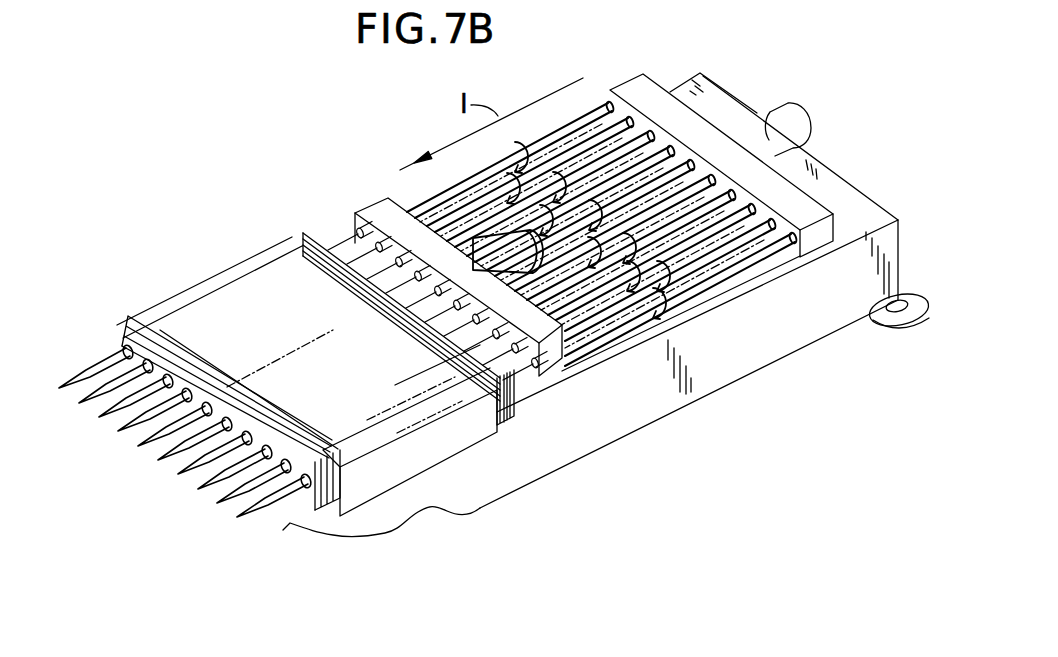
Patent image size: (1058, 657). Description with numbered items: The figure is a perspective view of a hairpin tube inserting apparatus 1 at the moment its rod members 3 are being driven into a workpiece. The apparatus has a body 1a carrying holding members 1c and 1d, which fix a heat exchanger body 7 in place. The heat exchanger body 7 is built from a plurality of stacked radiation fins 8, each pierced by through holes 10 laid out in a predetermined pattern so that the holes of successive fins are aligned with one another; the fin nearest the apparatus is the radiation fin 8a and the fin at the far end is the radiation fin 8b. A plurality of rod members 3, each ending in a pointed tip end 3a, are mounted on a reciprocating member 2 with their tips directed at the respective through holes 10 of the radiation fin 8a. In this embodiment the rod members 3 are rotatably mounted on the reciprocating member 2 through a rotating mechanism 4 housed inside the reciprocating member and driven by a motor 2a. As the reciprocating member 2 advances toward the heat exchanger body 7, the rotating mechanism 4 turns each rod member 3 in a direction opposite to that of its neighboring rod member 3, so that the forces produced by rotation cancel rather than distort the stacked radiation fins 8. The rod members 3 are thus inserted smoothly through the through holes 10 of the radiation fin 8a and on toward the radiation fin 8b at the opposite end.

The hairpin tube inserting apparatus 1 is at (807, 356).
The body 1a is at (604, 393).
The holding member 1c is at (461, 428).
The holding member 1d is at (280, 275).
The reciprocating member 2 is at (665, 88).
The motor 2a is at (788, 126).
The rod member 3 is at (590, 122).
The pointed tip end 3a is at (150, 435).
The rotating mechanism 4 is at (735, 99).
The heat exchanger body 7 is at (314, 222).
The radiation fin 8 is at (508, 421).
The radiation fin closer to one end 8a is at (517, 392).
The radiation fin closer to the opposite end 8b is at (310, 512).
The through hole 10 is at (145, 405).